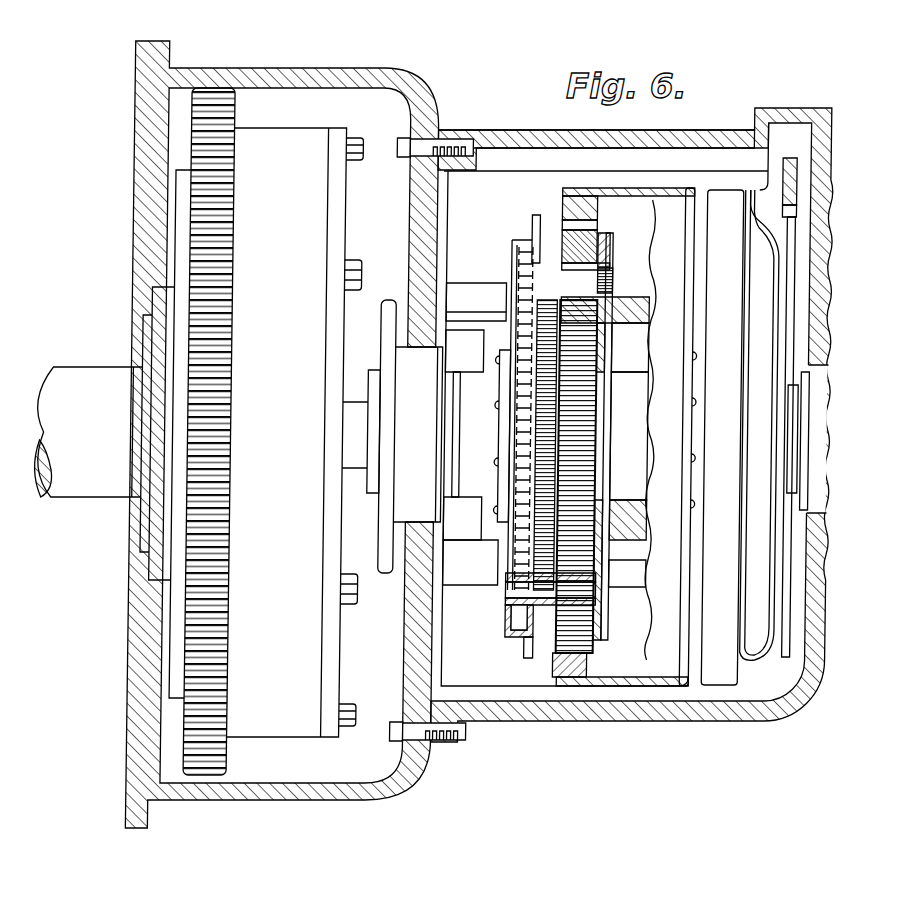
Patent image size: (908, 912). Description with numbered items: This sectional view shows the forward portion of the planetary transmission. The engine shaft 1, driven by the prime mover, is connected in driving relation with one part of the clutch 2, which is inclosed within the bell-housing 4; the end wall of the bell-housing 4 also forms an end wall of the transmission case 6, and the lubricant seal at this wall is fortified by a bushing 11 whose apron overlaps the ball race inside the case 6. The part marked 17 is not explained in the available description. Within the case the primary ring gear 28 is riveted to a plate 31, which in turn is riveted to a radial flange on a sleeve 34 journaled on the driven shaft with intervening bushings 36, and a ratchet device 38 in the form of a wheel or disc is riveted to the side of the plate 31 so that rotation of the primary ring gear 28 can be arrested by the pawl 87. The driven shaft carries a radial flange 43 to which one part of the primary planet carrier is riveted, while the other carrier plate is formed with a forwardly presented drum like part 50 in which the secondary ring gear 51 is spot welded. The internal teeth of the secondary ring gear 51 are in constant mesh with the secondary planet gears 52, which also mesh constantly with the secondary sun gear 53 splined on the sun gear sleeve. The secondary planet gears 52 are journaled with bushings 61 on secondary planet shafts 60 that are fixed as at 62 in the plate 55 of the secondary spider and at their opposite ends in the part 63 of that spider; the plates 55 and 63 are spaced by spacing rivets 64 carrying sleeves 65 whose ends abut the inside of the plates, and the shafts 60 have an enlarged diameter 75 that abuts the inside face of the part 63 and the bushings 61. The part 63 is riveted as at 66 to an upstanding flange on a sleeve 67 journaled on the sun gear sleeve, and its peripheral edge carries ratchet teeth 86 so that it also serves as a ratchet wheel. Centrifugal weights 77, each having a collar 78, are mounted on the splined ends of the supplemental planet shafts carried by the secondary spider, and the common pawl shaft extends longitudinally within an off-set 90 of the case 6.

The engine shaft 1 is at (96, 372).
The clutch 2 is at (278, 140).
The bell-housing 4 is at (378, 72).
The transmission case 6 is at (667, 712).
The bushing 11 is at (425, 472).
The opening in housing wall 17 is at (824, 394).
The primary ring gear 28 is at (720, 678).
The plate 31 is at (753, 648).
The sleeve 34 is at (792, 464).
The bushings 36 is at (803, 447).
The ratchet device 38 is at (793, 279).
The radial flange 43 is at (692, 422).
The drum like part 50 is at (660, 670).
The secondary ring gear 51 is at (590, 664).
The secondary planet gears 52 is at (598, 236).
The secondary sun gear 53 is at (588, 446).
The plate of secondary planet carrier 55 is at (608, 312).
The secondary planet shafts 60 is at (614, 283).
The bushings 61 is at (610, 247).
The fixed end of secondary planet shaft 62 is at (612, 268).
The part of secondary spider 63 is at (515, 258).
The spacing rivets 64 is at (530, 588).
The sleeves 65 is at (537, 607).
The rivets 66 is at (497, 466).
The sleeve 67 is at (462, 432).
The enlarged diameter 75 is at (548, 263).
The centrifugal weights 77 is at (505, 297).
The collar 78 is at (463, 435).
The ratchet teeth 86 is at (527, 655).
The pawl 87 is at (795, 178).
The off-set 90 is at (628, 131).